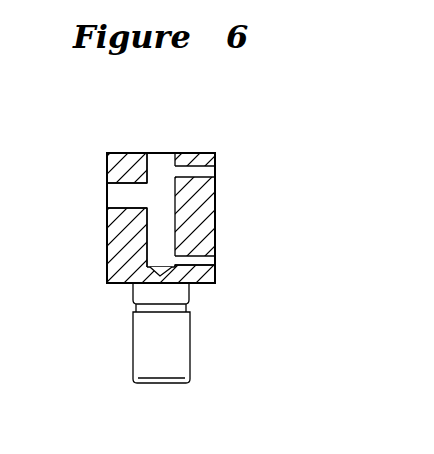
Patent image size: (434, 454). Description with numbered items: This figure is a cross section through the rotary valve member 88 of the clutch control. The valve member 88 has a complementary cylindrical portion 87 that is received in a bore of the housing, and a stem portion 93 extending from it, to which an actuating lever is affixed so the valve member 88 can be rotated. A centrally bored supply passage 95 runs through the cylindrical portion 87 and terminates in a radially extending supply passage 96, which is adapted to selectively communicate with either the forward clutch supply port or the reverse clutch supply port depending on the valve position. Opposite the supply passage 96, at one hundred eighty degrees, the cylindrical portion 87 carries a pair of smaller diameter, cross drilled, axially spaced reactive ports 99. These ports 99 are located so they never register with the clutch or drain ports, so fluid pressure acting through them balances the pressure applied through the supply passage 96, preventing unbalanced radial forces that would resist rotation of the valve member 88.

The cylindrical portion 87 is at (107, 170).
The valve member 88 is at (196, 214).
The stem portion 93 is at (145, 357).
The supply passage 95 is at (172, 195).
The radially extending supply passage 96 is at (118, 203).
The reactive ports 99 is at (221, 170).